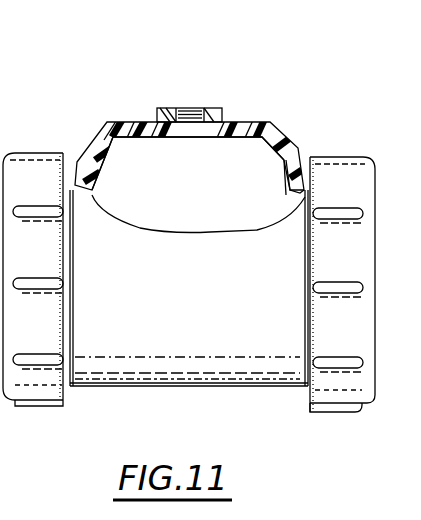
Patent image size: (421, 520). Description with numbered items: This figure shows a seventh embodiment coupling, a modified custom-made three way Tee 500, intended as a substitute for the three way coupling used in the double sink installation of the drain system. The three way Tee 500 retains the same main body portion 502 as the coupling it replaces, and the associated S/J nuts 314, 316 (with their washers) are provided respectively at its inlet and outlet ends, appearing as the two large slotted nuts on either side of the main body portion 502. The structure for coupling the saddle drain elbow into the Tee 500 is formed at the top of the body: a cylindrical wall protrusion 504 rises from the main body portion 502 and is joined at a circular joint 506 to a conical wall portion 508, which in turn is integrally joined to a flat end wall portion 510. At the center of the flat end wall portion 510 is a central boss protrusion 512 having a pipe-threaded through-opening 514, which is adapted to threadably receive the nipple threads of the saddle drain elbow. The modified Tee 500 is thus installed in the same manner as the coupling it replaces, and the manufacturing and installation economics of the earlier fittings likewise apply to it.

The S/J nut 314 is at (340, 415).
The S/J nut 316 is at (43, 407).
The three way Tee 500 is at (170, 385).
The main body portion 502 is at (273, 377).
The cylindrical wall protrusion 504 is at (305, 151).
The circular joint 506 is at (303, 130).
The conical wall portion 508 is at (277, 126).
The flat end wall portion 510 is at (234, 121).
The central boss protrusion 512 is at (157, 107).
The pipe-threaded through-opening 514 is at (181, 122).